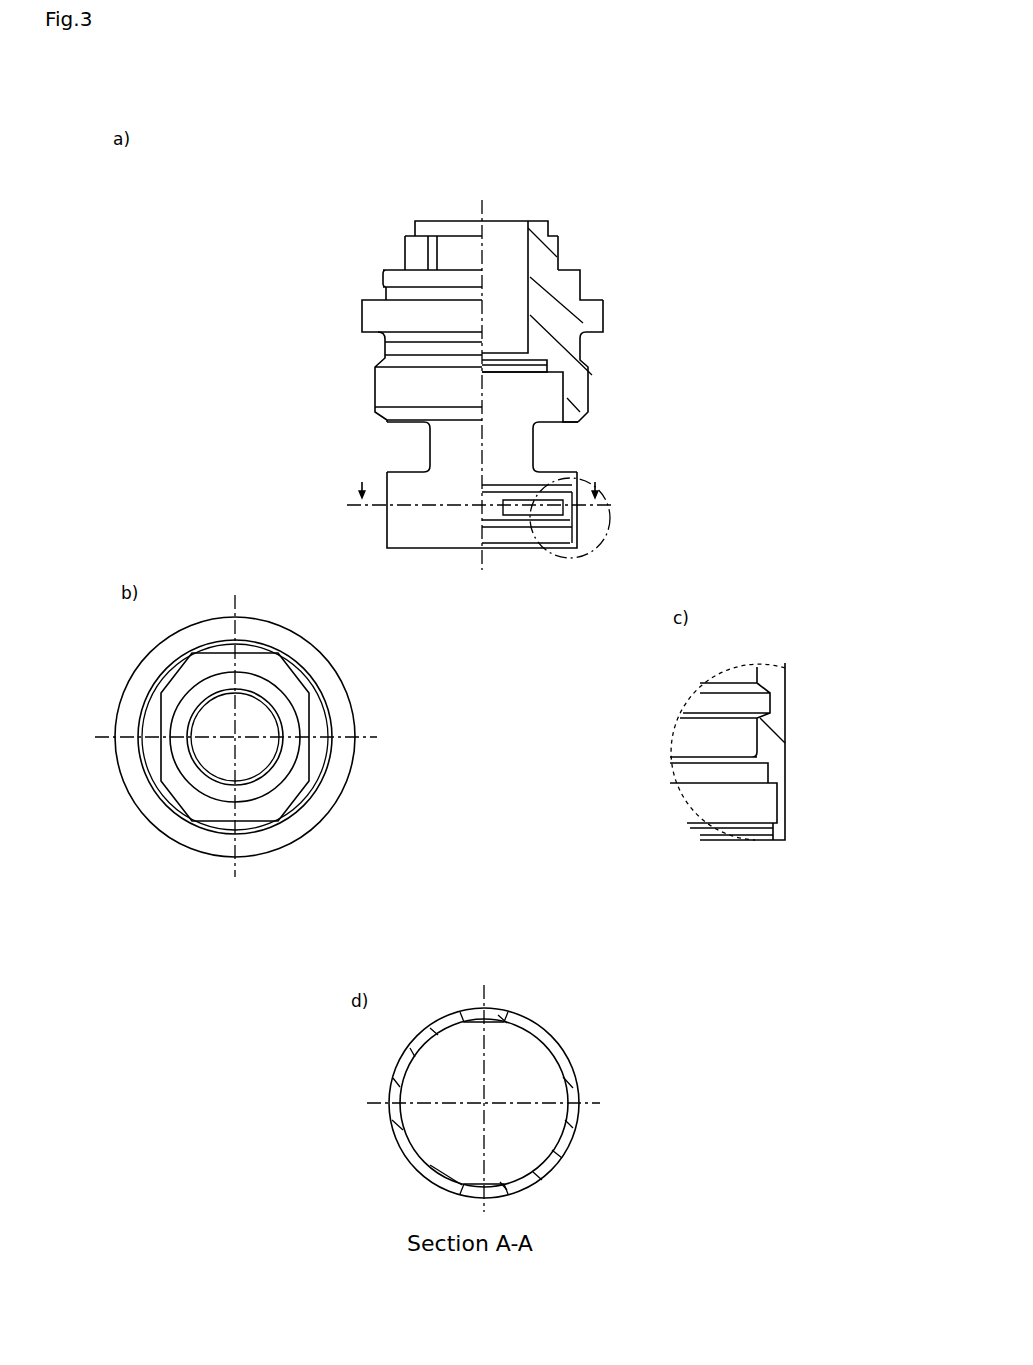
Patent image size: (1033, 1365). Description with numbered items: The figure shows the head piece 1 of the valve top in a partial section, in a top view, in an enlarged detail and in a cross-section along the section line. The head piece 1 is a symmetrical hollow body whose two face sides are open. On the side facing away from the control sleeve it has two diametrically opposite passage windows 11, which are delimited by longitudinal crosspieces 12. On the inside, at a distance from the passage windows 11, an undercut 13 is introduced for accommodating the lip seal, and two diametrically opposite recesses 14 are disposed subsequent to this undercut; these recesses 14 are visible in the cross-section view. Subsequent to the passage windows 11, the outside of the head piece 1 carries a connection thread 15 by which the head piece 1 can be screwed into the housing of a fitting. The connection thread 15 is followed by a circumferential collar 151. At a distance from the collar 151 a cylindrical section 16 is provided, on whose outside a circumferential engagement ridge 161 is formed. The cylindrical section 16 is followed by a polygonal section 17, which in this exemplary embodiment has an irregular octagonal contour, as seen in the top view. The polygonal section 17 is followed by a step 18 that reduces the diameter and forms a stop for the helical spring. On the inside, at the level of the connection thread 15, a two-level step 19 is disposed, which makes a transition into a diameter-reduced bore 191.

The head piece 1 is at (630, 87).
The passage windows 11 is at (402, 447).
The longitudinal crosspieces 12 is at (520, 448).
The undercut 13 is at (568, 533).
The recesses 14 is at (498, 1014).
The connection thread 15 is at (590, 405).
The collar 151 is at (605, 318).
The cylindrical section 16 is at (580, 290).
The engagement ridge 161 is at (383, 280).
The polygonal section 17 is at (405, 252).
The step 18 is at (548, 224).
The two-level step 19 is at (548, 365).
The diameter-reduced bore 191 is at (507, 262).